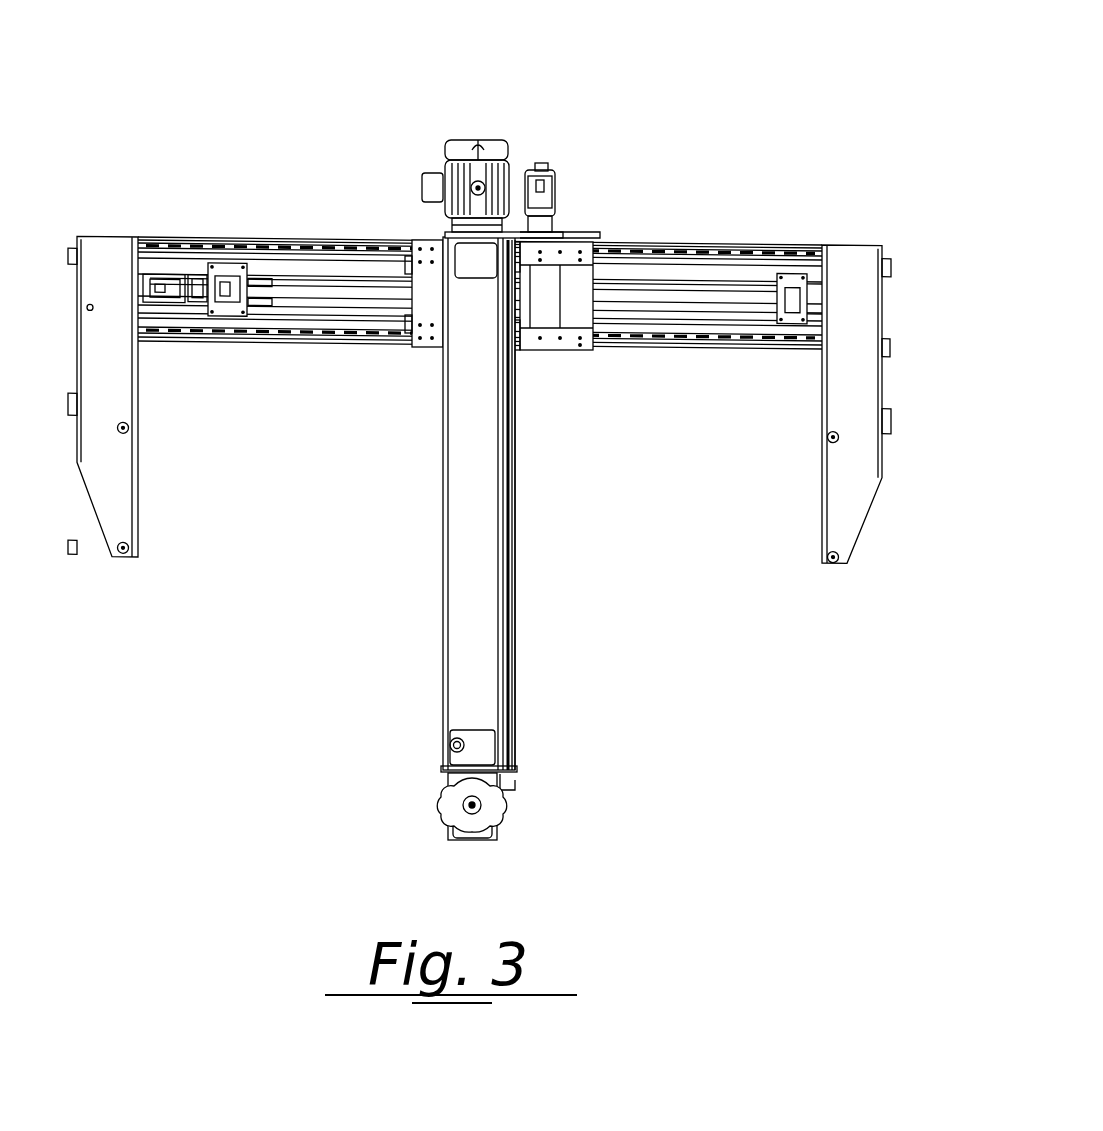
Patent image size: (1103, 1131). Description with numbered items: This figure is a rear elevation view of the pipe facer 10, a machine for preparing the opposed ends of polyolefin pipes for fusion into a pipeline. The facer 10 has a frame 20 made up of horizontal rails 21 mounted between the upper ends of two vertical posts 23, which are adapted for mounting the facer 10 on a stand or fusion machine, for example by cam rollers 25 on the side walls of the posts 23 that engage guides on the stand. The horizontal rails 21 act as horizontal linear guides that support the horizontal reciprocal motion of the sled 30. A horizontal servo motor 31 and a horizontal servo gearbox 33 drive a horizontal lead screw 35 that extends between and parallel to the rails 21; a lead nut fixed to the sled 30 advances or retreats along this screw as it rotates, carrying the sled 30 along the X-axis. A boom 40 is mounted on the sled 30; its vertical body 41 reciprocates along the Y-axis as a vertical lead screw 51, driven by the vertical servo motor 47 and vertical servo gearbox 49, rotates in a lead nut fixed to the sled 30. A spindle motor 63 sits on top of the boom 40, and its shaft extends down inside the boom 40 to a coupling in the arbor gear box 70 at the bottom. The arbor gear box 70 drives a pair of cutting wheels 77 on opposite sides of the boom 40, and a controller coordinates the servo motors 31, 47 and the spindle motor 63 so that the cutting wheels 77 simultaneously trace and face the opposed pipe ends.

The facer 10 is at (708, 70).
The frame 20 is at (243, 166).
The horizontal rails 21 is at (316, 246).
The vertical posts 23 is at (123, 494).
The cam rollers 25 is at (887, 244).
The sled 30 is at (420, 348).
The horizontal servo motor 31 is at (163, 273).
The horizontal servo gearbox 33 is at (232, 320).
The horizontal lead screw 35 is at (697, 290).
The boom 40 is at (374, 614).
The vertical column 41 is at (445, 526).
The vertical servo motor 47 is at (550, 170).
The vertical servo gearbox 49 is at (556, 234).
The vertical lead screw 51 is at (515, 553).
The spindle motor 63 is at (455, 142).
The arbor gear box 70 is at (495, 836).
The cutting wheels 77 is at (445, 808).